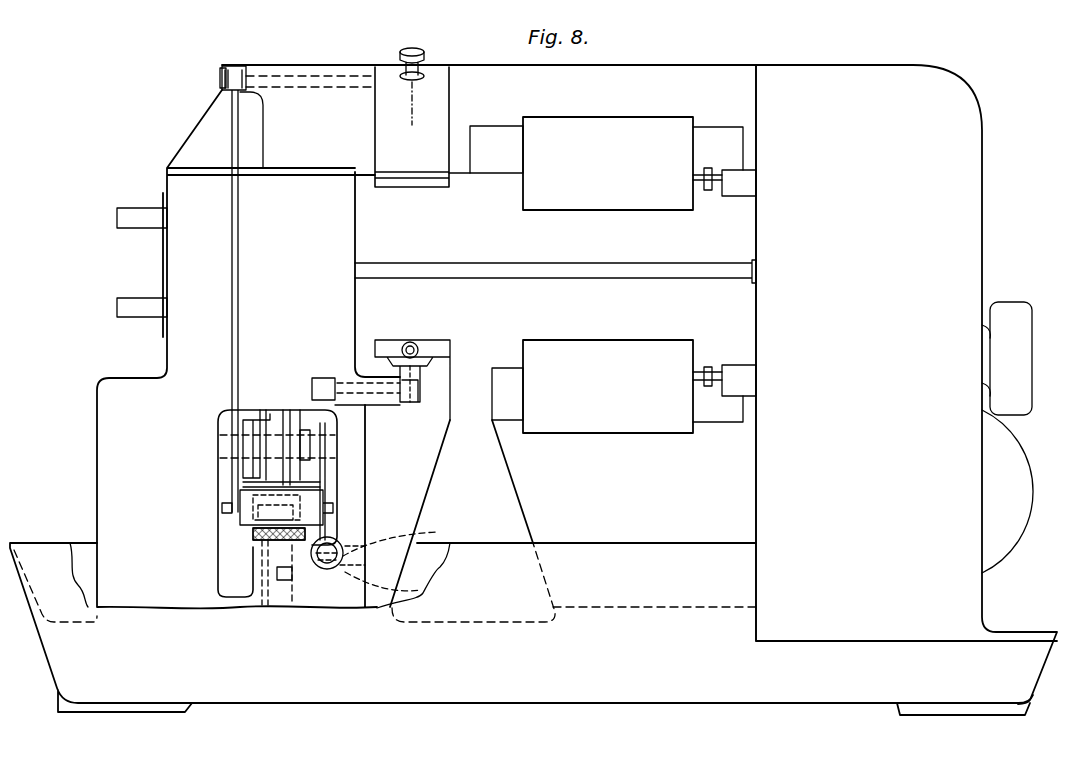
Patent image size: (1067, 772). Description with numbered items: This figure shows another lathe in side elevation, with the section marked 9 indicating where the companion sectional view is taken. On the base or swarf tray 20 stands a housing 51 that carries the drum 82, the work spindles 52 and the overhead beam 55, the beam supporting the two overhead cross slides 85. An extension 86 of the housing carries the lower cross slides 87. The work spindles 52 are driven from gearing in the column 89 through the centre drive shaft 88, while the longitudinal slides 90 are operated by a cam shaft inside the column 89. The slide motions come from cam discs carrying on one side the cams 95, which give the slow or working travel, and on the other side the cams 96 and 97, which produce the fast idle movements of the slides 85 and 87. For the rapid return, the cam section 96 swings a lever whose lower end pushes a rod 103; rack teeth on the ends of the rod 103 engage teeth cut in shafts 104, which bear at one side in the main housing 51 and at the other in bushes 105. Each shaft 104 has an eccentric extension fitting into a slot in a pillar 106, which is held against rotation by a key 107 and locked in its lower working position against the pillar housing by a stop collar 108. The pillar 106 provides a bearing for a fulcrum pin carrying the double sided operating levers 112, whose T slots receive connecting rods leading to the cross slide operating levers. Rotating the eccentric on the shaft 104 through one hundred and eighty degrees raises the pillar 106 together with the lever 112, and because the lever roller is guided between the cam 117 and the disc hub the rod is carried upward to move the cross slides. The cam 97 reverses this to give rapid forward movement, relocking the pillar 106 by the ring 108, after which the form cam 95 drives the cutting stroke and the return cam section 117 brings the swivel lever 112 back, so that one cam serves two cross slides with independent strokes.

The section line 9- 9 is at (396, 45).
The base or swarf tray 20 is at (11, 543).
The housing 51 is at (110, 478).
The work spindles 52 is at (140, 297).
The overhead beam 55 is at (483, 65).
The drum 82 is at (165, 195).
The overhead cross slides 85 is at (393, 110).
The extension of the housing 86 is at (422, 477).
The lower cross slides 87 is at (473, 302).
The centre drive shaft 88 is at (520, 270).
The column 89 is at (894, 353).
The longitudinal slides 90 is at (635, 117).
The cams 95 is at (267, 478).
The cam 96 is at (288, 473).
The cam 97 is at (288, 407).
The rod 103 is at (338, 545).
The shafts 104 is at (422, 593).
The bushes 105 is at (415, 532).
The pillar 106 is at (280, 595).
The key 107 is at (267, 580).
The stop collar 108 is at (253, 533).
The operating levers 112 is at (257, 480).
The cam 117 is at (270, 393).